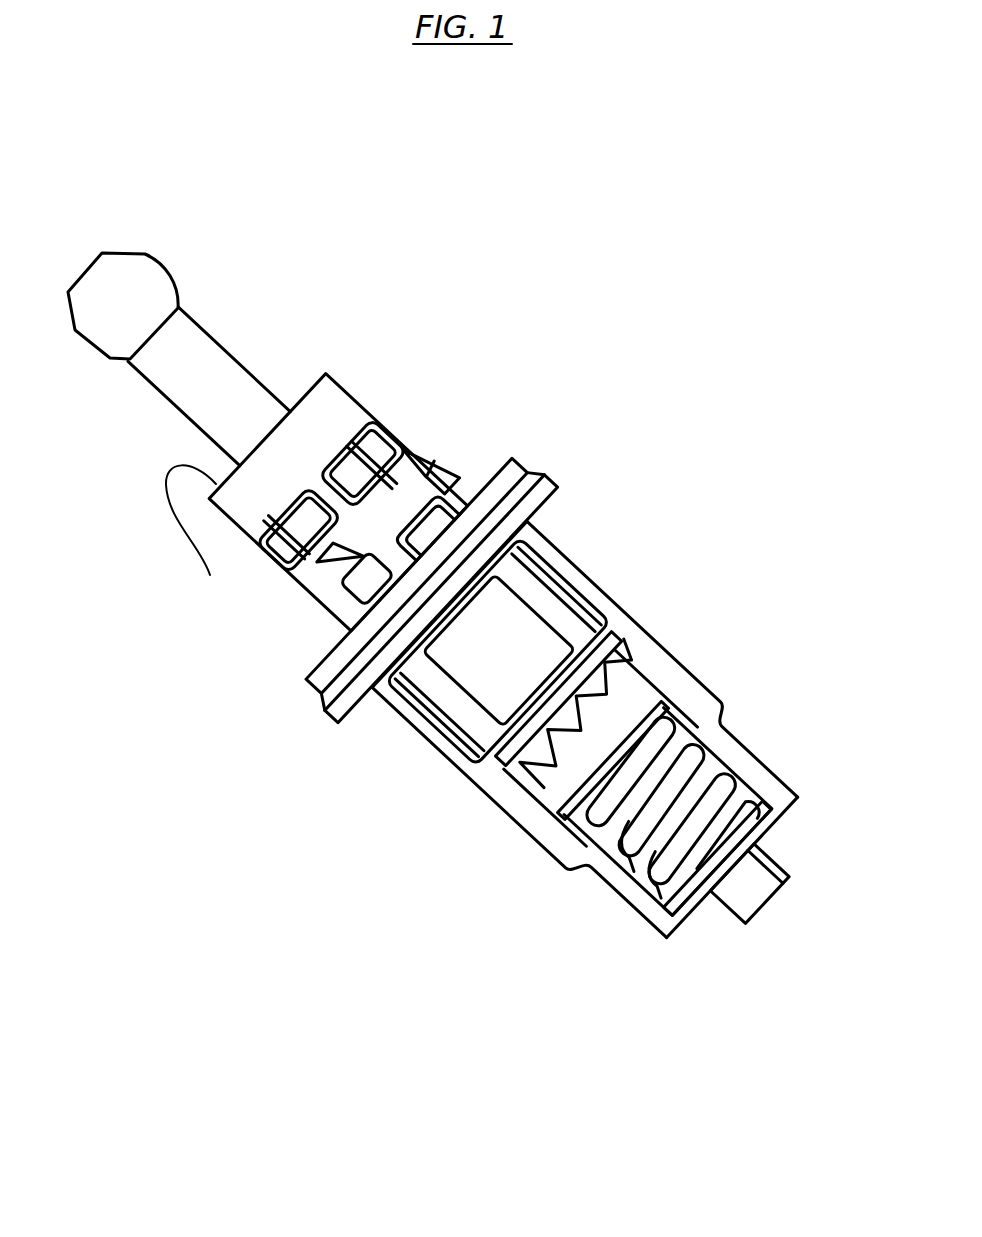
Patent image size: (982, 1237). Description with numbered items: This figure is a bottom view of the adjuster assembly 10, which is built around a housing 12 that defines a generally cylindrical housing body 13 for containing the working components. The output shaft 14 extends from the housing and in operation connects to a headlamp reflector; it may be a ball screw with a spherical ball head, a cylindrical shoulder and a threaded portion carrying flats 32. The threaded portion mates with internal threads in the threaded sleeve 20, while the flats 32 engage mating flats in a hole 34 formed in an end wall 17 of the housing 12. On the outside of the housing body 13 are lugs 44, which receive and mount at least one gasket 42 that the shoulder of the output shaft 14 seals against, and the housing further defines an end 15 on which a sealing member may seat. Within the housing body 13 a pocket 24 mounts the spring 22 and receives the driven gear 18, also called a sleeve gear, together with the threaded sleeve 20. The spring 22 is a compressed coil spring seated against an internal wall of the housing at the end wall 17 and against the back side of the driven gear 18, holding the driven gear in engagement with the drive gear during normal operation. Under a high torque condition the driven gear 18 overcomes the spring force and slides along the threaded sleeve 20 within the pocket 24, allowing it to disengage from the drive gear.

The adjuster assembly 10 is at (710, 452).
The housing 12 is at (435, 762).
The housing body 13 is at (627, 633).
The output shaft 14 is at (196, 340).
The end 15 is at (210, 575).
The end wall 17 is at (680, 927).
The driven gear 18 is at (657, 695).
The threaded sleeve 20 is at (628, 822).
The spring 22 is at (631, 873).
The pocket 24 is at (667, 898).
The flats 32 is at (758, 900).
The hole 34 is at (760, 843).
The gasket 42 is at (527, 470).
The lugs 44 is at (431, 457).